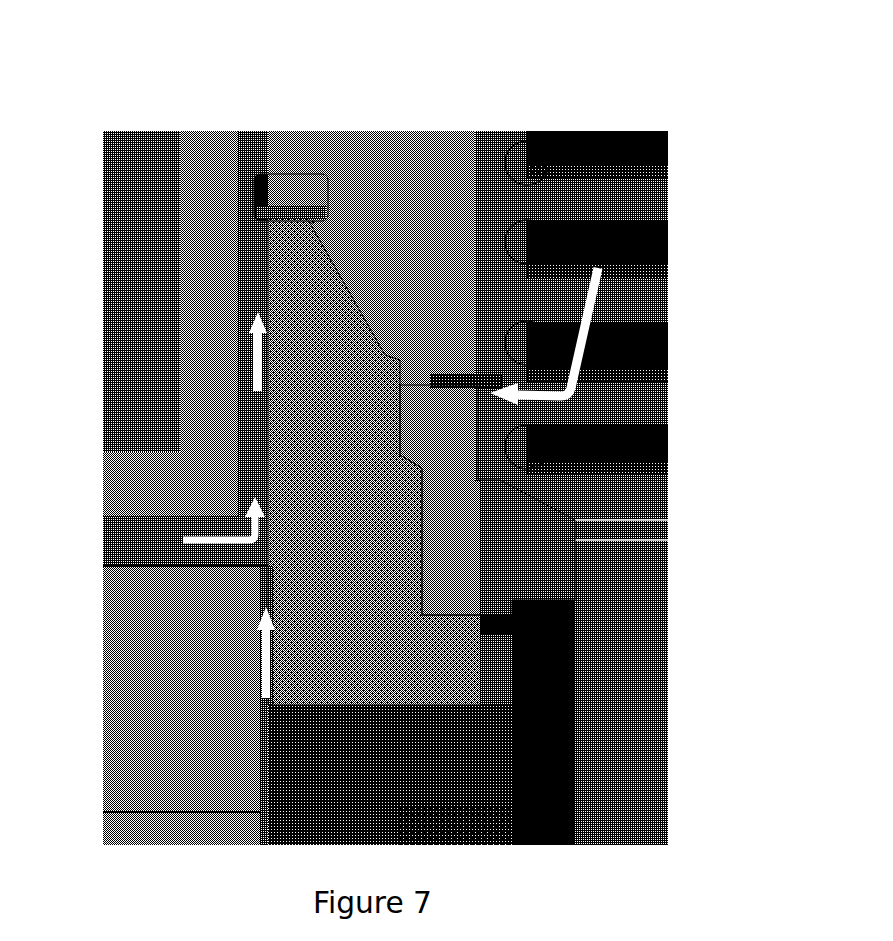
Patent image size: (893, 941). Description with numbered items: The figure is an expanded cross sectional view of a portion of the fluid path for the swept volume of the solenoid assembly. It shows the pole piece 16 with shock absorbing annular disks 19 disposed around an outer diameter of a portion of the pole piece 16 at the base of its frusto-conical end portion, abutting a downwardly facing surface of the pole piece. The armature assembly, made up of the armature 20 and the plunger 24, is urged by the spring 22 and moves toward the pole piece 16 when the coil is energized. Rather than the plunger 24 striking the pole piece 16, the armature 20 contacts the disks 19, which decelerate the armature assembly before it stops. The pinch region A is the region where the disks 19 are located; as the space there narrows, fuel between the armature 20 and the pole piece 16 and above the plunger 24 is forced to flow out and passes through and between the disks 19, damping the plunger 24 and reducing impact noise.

The pole piece 16 is at (404, 157).
The annular disks 19 is at (313, 192).
The armature 20 is at (300, 381).
The spring 22 is at (540, 132).
The plunger 24 is at (512, 580).
The pinch region A is at (313, 222).